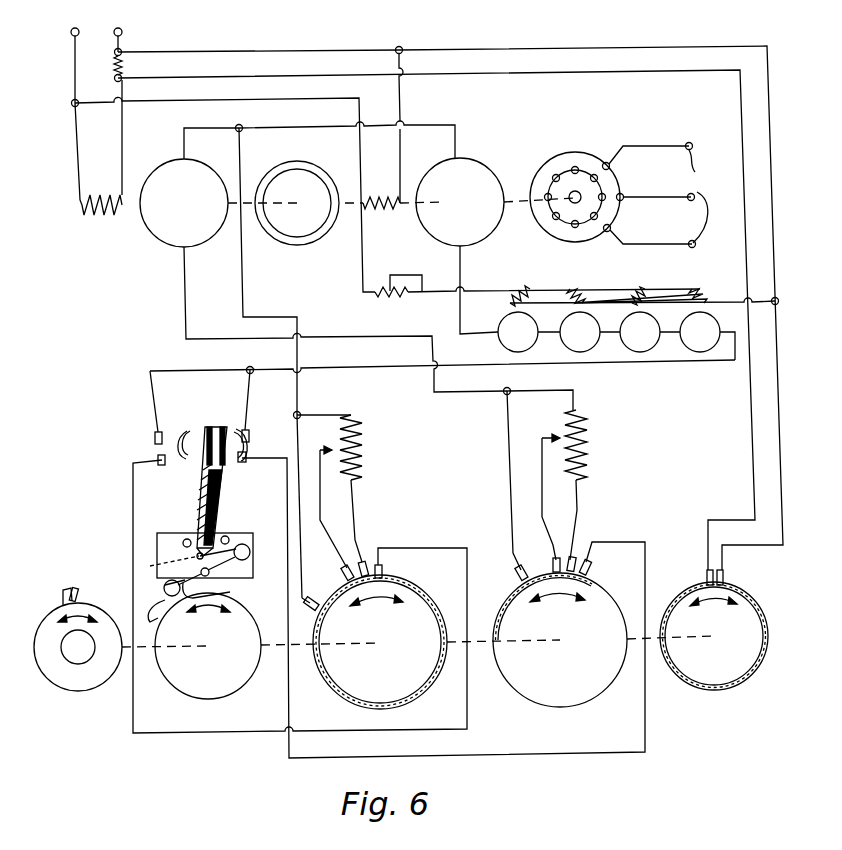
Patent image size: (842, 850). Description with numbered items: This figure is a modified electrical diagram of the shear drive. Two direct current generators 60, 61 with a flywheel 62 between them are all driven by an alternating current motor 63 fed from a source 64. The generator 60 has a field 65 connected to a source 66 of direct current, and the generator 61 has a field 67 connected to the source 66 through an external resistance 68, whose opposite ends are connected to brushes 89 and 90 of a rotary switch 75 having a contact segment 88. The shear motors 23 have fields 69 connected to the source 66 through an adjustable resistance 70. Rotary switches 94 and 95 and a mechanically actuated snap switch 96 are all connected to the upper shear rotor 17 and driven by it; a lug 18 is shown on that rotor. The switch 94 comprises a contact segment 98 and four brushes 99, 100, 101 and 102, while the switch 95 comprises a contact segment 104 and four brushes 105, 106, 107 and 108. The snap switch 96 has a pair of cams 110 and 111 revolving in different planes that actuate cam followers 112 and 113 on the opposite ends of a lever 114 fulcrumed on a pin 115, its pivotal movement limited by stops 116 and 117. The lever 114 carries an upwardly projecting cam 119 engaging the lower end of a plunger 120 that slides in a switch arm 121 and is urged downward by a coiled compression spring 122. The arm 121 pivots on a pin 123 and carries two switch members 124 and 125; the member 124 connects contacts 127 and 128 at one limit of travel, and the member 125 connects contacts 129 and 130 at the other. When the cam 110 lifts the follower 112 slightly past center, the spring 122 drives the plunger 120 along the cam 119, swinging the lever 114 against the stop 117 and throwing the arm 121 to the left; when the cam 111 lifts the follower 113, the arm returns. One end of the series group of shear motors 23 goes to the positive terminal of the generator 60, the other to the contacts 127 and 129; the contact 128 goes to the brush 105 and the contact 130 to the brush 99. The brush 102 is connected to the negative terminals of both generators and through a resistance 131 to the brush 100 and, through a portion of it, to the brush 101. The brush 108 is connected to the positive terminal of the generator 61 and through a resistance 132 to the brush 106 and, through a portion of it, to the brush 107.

The upper shear rotor 17 is at (77, 686).
The stop lug 18 is at (76, 590).
The shear motors 23 is at (692, 346).
The direct current generator 60 is at (490, 220).
The direct current generator 61 is at (170, 233).
The flywheel 62 is at (280, 170).
The alternating current motor 63 is at (573, 154).
The source 64 is at (702, 196).
The field 65 is at (381, 213).
The source of direct current 66 is at (96, 25).
The field 67 is at (101, 215).
The external resistance 68 is at (128, 65).
The fields 69 is at (575, 296).
The adjustable resistance 70 is at (398, 295).
The rotary switch 75 is at (714, 636).
The contact segment 88 is at (762, 658).
The brush 89 is at (723, 577).
The brush 90 is at (707, 577).
The rotary switch 94 is at (380, 642).
The rotary switch 95 is at (560, 640).
The mechanically actuated snap switch 96 is at (208, 646).
The contact segment 98 is at (423, 591).
The brush 99 is at (383, 568).
The brush 100 is at (365, 580).
The brush 101 is at (344, 576).
The brush 102 is at (314, 610).
The contact segment 104 is at (506, 609).
The brush 105 is at (592, 567).
The brush 106 is at (576, 548).
The brush 107 is at (552, 560).
The brush 108 is at (516, 574).
The cam 110 is at (194, 590).
The cam 111 is at (146, 617).
The cam follower 112 is at (164, 589).
The cam follower 113 is at (252, 553).
The lever 114 is at (210, 573).
The pin 115 is at (212, 579).
The stop 116 is at (228, 538).
The stop 117 is at (185, 540).
The cam 119 is at (196, 561).
The plunger 120 is at (199, 522).
The switch arm 121 is at (222, 473).
The coiled compression spring 122 is at (222, 491).
The pin 123 is at (163, 564).
The switch member 124 is at (236, 431).
The switch member 125 is at (188, 432).
The contact 127 is at (249, 433).
The contact 128 is at (247, 456).
The contact 129 is at (154, 437).
The contact 130 is at (157, 459).
The resistance 131 is at (366, 460).
The resistance 132 is at (592, 450).